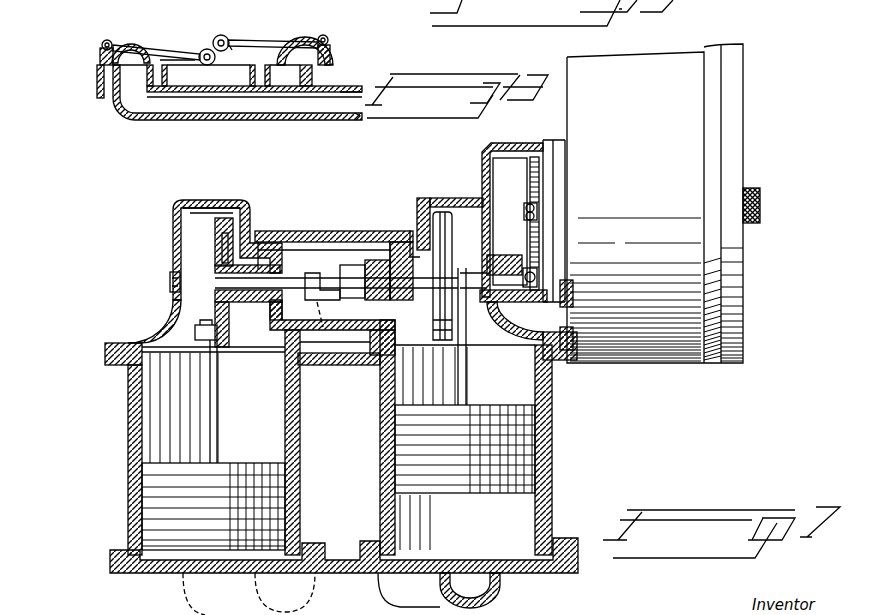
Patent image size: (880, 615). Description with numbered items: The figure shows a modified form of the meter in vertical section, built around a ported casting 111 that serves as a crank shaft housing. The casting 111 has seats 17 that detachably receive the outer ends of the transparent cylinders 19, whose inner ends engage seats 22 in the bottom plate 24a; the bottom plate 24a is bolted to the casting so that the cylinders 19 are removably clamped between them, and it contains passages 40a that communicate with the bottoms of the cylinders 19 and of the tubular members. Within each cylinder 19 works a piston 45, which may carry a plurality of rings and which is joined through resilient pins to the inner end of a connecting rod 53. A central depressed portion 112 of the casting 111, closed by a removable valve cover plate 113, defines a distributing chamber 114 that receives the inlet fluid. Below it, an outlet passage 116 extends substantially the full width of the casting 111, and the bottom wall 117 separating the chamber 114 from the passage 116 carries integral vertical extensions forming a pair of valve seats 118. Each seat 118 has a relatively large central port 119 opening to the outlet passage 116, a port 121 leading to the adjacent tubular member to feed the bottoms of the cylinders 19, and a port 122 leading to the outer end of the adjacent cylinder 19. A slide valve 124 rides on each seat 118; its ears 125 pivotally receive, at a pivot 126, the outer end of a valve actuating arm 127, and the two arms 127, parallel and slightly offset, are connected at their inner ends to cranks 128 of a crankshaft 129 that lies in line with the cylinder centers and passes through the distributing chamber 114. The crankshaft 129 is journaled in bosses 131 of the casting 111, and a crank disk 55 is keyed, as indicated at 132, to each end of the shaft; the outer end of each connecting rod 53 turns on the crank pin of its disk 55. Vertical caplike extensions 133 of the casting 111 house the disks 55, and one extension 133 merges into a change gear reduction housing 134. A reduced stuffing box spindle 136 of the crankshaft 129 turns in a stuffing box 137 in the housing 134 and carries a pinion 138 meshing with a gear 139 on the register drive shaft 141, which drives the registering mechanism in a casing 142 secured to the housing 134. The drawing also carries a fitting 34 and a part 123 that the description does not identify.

In FIG. 7, the seats 17 is at (140, 343).
In FIG. 7, the transparent cylinders 19 is at (300, 420).
In FIG. 7, the seats 22 is at (312, 552).
In FIG. 7, the bottom plate 24a is at (378, 585).
In FIG. 7, the piston rod 34 is at (195, 338).
In FIG. 7, the passages 40a is at (500, 592).
In FIG. 7, the pistons 45 is at (165, 470).
In FIG. 7, the connecting rod 53 is at (225, 385).
In FIG. 7, the crank disk 55 is at (450, 237).
In FIG. 7, the ported casting 111 is at (173, 228).
In FIG. 7, the central depressed portion 112 is at (288, 231).
In FIG. 7, the removable valve cover plate 113 is at (358, 231).
In FIG. 7, the distributing chamber 114 is at (322, 243).
In FIG. 8, the outlet passage 116 is at (303, 98).
In FIG. 7, the outlet passage 116 is at (340, 360).
In FIG. 8, the bottom wall 117 is at (208, 96).
In FIG. 8, the valve seats 118 is at (160, 60).
In FIG. 8, the central port 119 is at (132, 78).
In FIG. 8, the port 121 is at (100, 90).
In FIG. 8, the port 122 is at (217, 53).
In FIG. 8, the pivot 123 is at (226, 36).
In FIG. 8, the slide valve 124 is at (131, 44).
In FIG. 8, the ears 125 is at (100, 55).
In FIG. 8, the pivot 126 is at (104, 42).
In FIG. 8, the valve actuating arm 127 is at (170, 50).
In FIG. 8, the cranks 128 is at (229, 40).
In FIG. 7, the cranks 128 is at (336, 278).
In FIG. 8, the crankshaft 129 is at (207, 49).
In FIG. 7, the crankshaft 129 is at (398, 240).
In FIG. 7, the bosses 131 is at (262, 232).
In FIG. 7, the key 132 is at (215, 272).
In FIG. 7, the caplike extensions 133 is at (235, 200).
In FIG. 7, the change gear reduction housing 134 is at (512, 143).
In FIG. 7, the stuffing box spindle 136 is at (526, 272).
In FIG. 7, the stuffing box 137 is at (525, 216).
In FIG. 7, the pinion 138 is at (545, 276).
In FIG. 7, the gear 139 is at (540, 180).
In FIG. 7, the register drive shaft 141 is at (545, 208).
In FIG. 7, the casing 142 is at (596, 75).